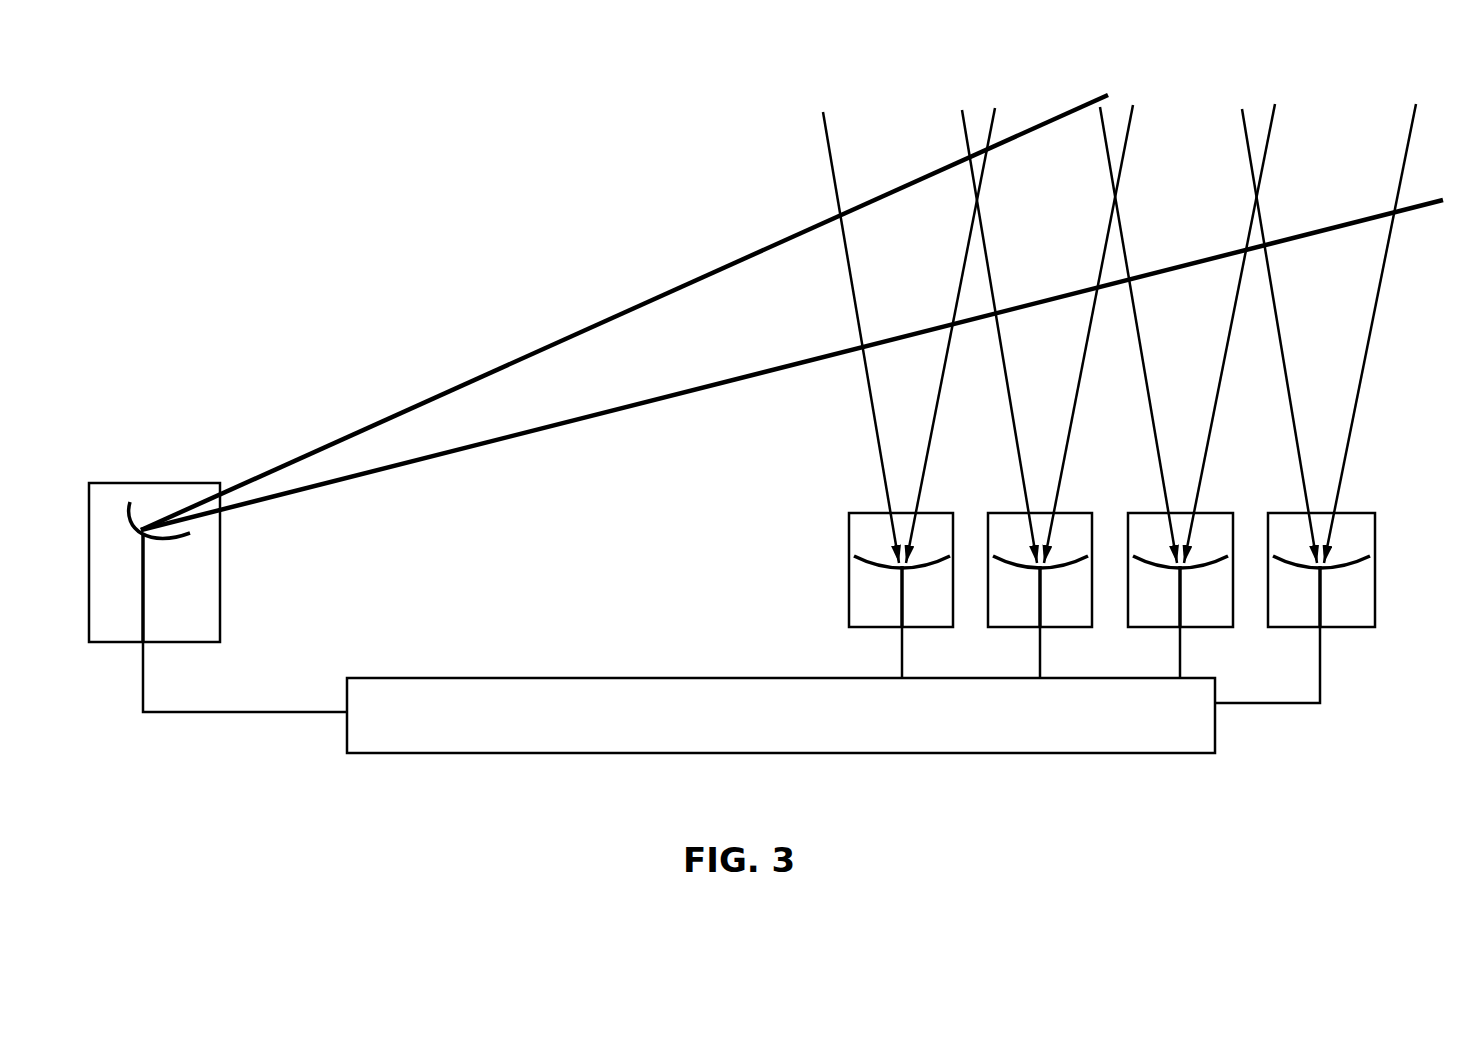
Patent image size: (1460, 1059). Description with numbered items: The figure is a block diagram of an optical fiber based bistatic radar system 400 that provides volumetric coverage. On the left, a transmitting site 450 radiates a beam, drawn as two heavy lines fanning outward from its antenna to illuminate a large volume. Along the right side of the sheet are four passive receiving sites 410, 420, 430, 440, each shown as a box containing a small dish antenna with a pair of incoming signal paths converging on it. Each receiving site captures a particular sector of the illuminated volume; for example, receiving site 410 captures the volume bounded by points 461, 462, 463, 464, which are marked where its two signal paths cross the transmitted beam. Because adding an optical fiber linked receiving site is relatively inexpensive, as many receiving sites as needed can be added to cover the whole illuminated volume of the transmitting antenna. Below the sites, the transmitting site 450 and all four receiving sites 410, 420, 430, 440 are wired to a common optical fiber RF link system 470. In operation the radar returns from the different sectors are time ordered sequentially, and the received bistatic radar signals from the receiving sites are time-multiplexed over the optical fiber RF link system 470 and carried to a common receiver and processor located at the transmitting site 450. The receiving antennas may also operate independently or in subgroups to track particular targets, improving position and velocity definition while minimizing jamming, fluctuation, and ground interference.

The bistatic radar system 400 is at (768, 815).
The receiving site 410 is at (897, 576).
The receiving site 420 is at (1039, 576).
The receiving site 430 is at (1179, 576).
The receiving site 440 is at (1295, 588).
The transmitting site 450 is at (218, 583).
The point 461 is at (860, 350).
The point 462 is at (953, 322).
The point 463 is at (988, 145).
The point 464 is at (840, 213).
The optical fiber RF link system 470 is at (781, 698).